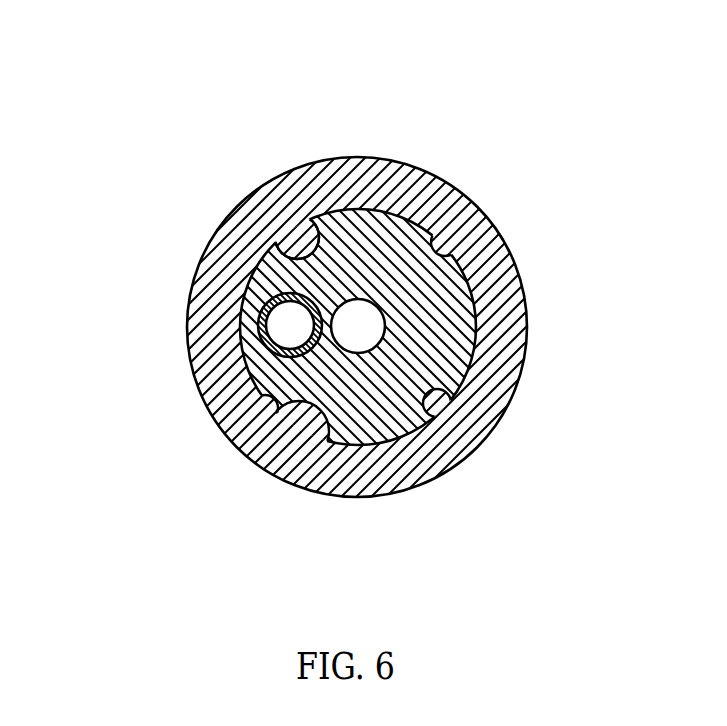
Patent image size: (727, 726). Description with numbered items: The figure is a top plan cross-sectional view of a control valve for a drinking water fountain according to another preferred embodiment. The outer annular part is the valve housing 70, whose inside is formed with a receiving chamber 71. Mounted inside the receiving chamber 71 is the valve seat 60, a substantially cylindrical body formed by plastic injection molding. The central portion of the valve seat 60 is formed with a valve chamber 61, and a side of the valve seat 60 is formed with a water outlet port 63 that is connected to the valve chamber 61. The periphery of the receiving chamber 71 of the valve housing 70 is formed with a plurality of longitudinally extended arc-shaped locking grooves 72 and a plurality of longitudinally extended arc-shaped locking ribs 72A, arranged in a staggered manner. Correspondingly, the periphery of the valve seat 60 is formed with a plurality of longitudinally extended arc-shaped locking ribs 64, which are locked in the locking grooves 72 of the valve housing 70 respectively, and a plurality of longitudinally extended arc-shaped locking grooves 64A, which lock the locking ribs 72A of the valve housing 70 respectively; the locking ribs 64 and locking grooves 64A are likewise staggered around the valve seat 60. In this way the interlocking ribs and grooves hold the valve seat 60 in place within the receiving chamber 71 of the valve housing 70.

The valve seat 60 is at (458, 384).
The valve chamber 61 is at (372, 322).
The water outlet port 63 is at (287, 323).
The locking ribs 64 is at (318, 425).
The locking grooves 64A is at (329, 236).
The valve housing 70 is at (508, 220).
The receiving chamber 71 is at (432, 205).
The locking grooves 72 is at (240, 420).
The locking ribs 72A is at (277, 247).